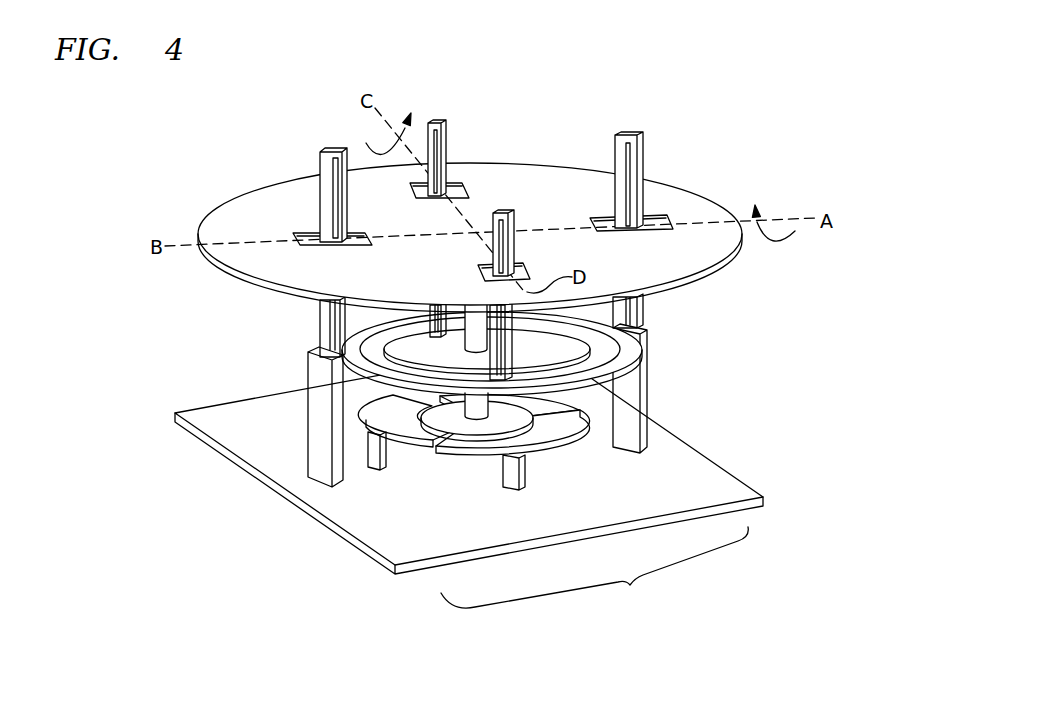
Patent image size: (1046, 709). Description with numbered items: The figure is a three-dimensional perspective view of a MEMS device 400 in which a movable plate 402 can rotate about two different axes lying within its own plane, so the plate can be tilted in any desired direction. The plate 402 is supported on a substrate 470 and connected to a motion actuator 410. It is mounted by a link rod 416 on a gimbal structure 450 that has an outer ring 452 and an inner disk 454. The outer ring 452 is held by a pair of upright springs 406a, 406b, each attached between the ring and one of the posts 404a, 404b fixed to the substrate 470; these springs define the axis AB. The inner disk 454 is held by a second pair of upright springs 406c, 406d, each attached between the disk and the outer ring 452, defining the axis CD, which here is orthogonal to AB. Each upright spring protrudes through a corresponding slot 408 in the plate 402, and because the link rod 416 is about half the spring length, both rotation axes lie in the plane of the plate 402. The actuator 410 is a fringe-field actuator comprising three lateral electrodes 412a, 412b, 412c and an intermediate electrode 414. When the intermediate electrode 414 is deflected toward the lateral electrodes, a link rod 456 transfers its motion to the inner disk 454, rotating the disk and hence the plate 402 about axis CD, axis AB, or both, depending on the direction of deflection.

The MEMS device 400 is at (228, 539).
The movable plate 402 is at (685, 197).
The post 404a is at (641, 432).
The post 404b is at (314, 378).
The upright spring 406a is at (638, 150).
The upright spring 406b is at (322, 167).
The upright spring 406c is at (440, 130).
The upright spring 406d is at (507, 223).
The slot 408 is at (471, 260).
The motion actuator 410 is at (594, 574).
The lateral electrode 412a is at (532, 443).
The lateral electrode 412b is at (412, 436).
The lateral electrode 412c is at (562, 407).
The intermediate electrode 414 is at (452, 420).
The link rod 416 is at (486, 313).
The gimbal structure 450 is at (292, 326).
The outer ring 452 is at (628, 348).
The inner disk 454 is at (420, 343).
The link rod 456 is at (476, 421).
The substrate 470 is at (717, 478).